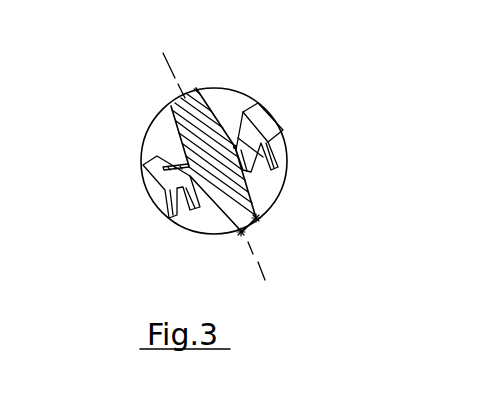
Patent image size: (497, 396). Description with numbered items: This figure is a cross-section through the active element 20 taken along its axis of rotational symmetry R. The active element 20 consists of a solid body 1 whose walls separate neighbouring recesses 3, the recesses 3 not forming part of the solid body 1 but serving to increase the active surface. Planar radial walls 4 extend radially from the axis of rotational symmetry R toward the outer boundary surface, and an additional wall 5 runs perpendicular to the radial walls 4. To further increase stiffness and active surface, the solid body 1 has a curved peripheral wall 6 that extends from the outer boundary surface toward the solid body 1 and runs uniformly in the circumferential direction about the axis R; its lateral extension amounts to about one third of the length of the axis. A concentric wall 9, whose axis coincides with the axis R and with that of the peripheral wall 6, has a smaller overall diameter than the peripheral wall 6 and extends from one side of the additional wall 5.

The solid body 1 is at (280, 132).
The recesses 3 is at (170, 152).
The radial walls 4 is at (245, 233).
The additional wall 5 is at (235, 147).
The peripheral wall 6 is at (146, 163).
The concentric wall 9 is at (250, 158).
The active element 20 is at (123, 236).
The axis of rotational symmetry R is at (204, 149).